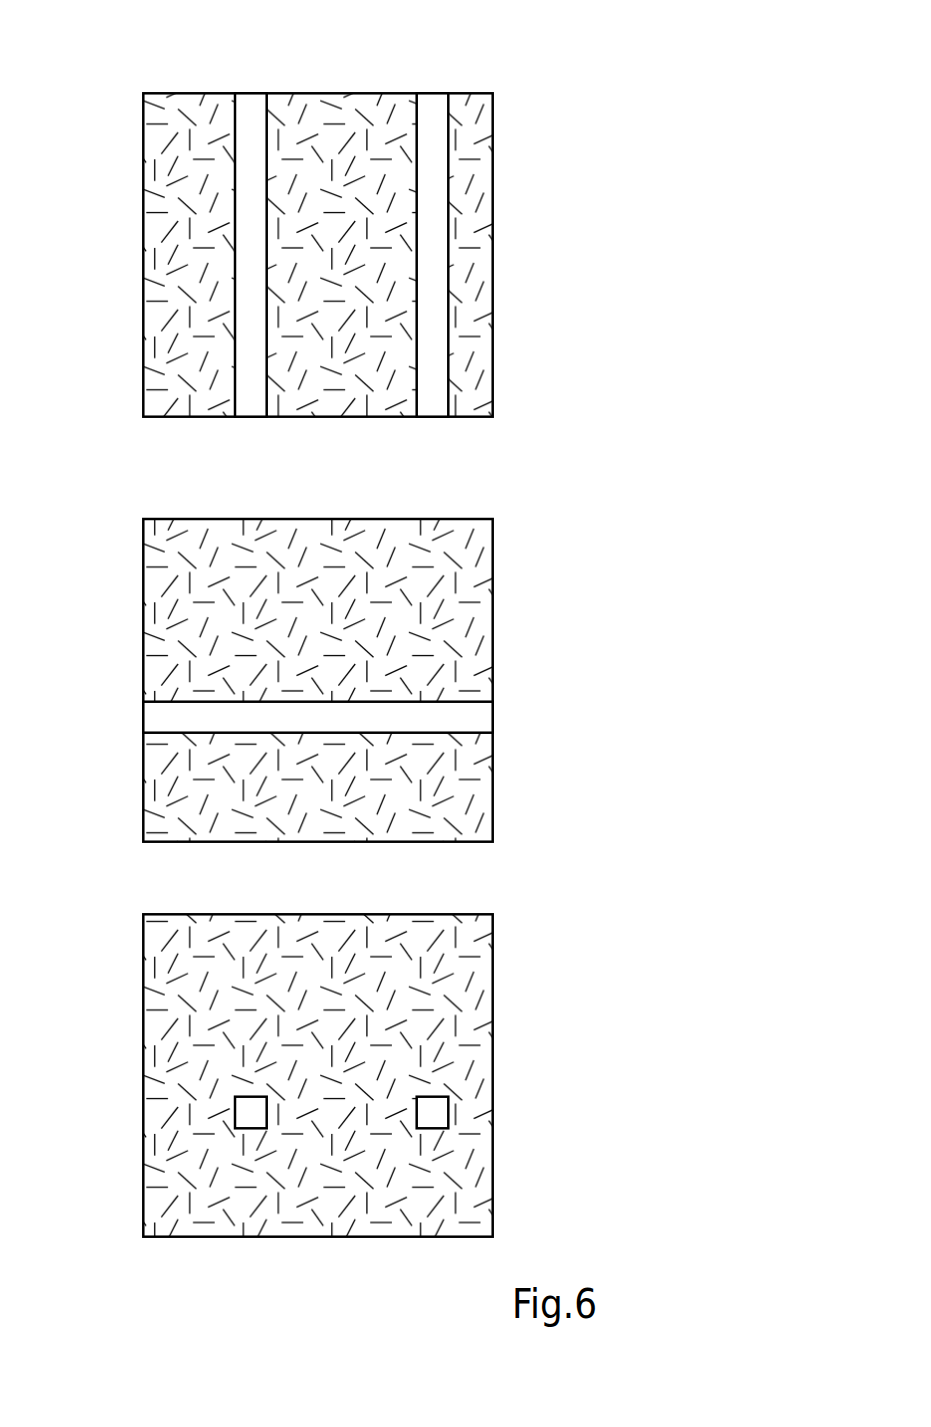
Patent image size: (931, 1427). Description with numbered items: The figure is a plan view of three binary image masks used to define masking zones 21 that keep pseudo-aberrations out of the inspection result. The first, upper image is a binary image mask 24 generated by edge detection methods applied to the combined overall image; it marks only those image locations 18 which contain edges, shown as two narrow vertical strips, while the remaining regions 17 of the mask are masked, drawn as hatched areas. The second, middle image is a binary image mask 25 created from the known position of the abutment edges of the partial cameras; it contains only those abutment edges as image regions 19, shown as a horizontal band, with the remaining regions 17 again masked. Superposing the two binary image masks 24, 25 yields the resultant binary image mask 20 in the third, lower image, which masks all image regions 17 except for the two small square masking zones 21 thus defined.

The remaining regions 17 is at (472, 220).
The image locations 18 is at (437, 105).
The image regions 19 is at (453, 725).
The resultant binary image mask 20 is at (493, 952).
The masking zones 21 is at (433, 1113).
The binary image mask 24 is at (493, 323).
The binary image mask 25 is at (493, 635).